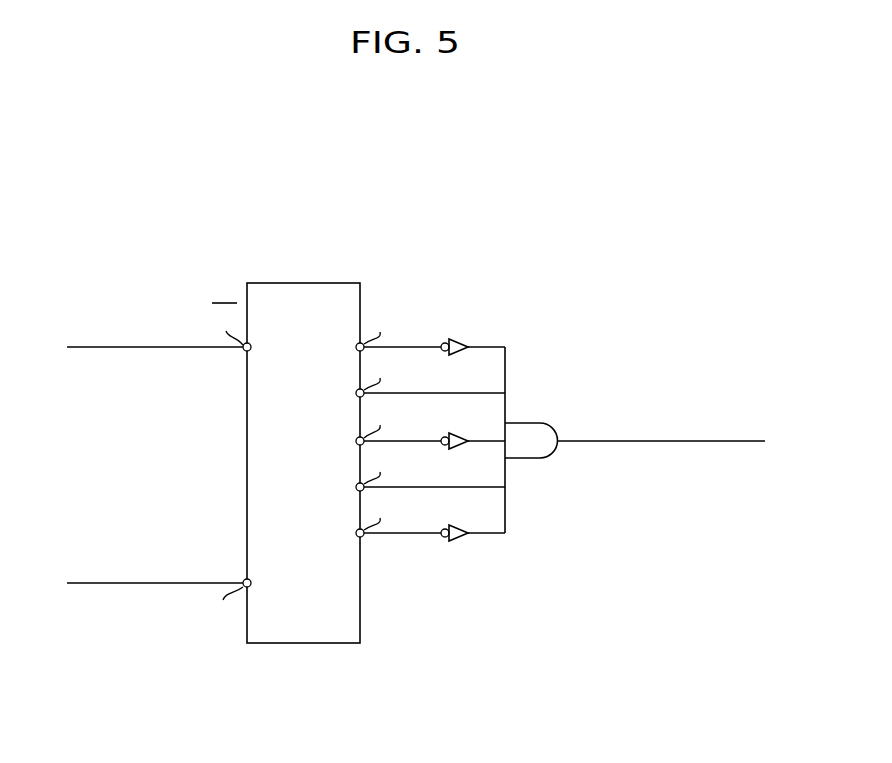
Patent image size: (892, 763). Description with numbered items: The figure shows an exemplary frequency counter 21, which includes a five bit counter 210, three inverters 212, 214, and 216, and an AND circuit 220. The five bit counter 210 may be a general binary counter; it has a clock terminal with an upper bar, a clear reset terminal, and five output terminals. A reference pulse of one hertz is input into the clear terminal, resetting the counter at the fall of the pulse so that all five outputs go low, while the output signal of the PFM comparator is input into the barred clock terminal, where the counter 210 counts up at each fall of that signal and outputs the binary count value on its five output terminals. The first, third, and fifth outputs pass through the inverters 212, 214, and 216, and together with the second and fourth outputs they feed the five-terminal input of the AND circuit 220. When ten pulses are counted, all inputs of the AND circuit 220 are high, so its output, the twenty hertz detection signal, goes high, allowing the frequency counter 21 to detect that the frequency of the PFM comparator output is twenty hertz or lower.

The frequency counter 21 is at (451, 664).
The 5 bit counter 210 is at (300, 645).
The inverter 212 is at (462, 352).
The inverter 214 is at (462, 446).
The inverter 216 is at (462, 538).
The AND circuit 220 is at (530, 460).